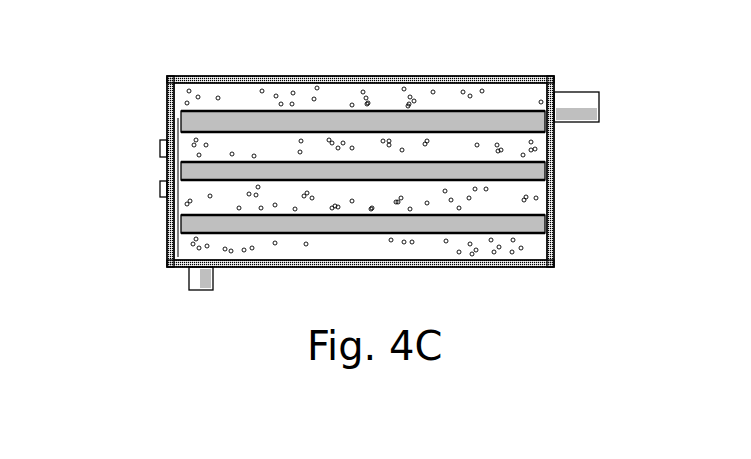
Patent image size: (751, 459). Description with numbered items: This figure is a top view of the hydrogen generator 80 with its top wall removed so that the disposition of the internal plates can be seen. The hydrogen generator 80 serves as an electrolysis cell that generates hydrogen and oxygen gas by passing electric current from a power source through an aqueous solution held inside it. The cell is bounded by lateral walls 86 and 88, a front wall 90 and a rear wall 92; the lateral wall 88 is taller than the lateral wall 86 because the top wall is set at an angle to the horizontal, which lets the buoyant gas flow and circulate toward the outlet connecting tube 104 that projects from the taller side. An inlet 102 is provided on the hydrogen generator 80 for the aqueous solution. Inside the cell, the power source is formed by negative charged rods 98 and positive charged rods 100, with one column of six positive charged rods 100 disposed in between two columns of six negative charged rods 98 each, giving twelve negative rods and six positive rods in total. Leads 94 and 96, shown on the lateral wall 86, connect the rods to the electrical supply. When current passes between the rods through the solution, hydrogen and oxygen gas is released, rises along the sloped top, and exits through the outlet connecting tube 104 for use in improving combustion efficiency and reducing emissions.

The hydrogen generator 80 is at (158, 76).
The lateral wall 86 is at (167, 236).
The lateral wall 88 is at (554, 145).
The front wall 90 is at (508, 267).
The rear wall 92 is at (325, 78).
The lead 94 is at (160, 146).
The lead 96 is at (160, 190).
The negative charged rods 98 is at (535, 124).
The positive charged rods 100 is at (540, 180).
The inlet 102 is at (200, 290).
The outlet connecting tube 104 is at (575, 100).